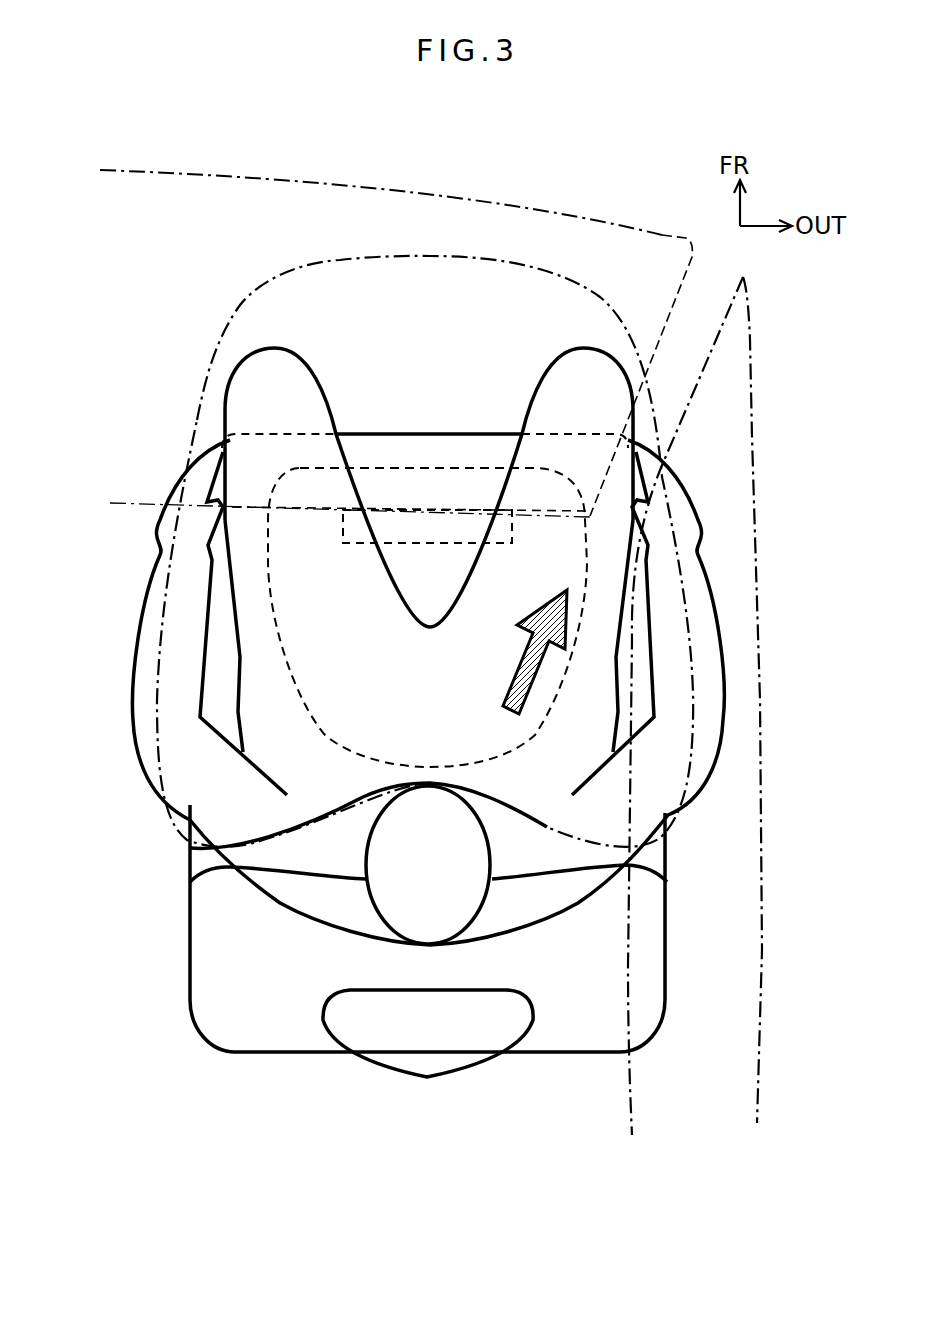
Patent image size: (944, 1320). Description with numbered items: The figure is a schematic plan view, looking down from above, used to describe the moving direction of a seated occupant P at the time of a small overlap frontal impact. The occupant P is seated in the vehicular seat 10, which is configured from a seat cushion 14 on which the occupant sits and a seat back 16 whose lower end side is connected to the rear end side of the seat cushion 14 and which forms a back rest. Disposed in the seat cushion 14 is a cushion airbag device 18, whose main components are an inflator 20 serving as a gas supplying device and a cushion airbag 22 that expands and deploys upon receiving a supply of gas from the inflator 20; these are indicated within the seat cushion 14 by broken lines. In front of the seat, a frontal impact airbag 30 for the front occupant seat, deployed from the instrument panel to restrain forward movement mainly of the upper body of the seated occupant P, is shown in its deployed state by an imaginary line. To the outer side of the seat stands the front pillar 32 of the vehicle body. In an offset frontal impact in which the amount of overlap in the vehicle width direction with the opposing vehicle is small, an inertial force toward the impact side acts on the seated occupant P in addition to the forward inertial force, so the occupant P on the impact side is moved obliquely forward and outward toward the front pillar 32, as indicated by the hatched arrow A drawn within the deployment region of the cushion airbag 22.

The vehicular seat 10 is at (139, 898).
The seat cushion 14 is at (225, 673).
The seat back 16 is at (240, 1023).
The cushion airbag device 18 is at (405, 465).
The inflator 20 is at (470, 510).
The cushion airbag 22 is at (367, 480).
The frontal impact airbag 30 is at (216, 350).
The front pillar 32 is at (685, 302).
The seated occupant P is at (327, 902).
The arrow A is at (536, 649).